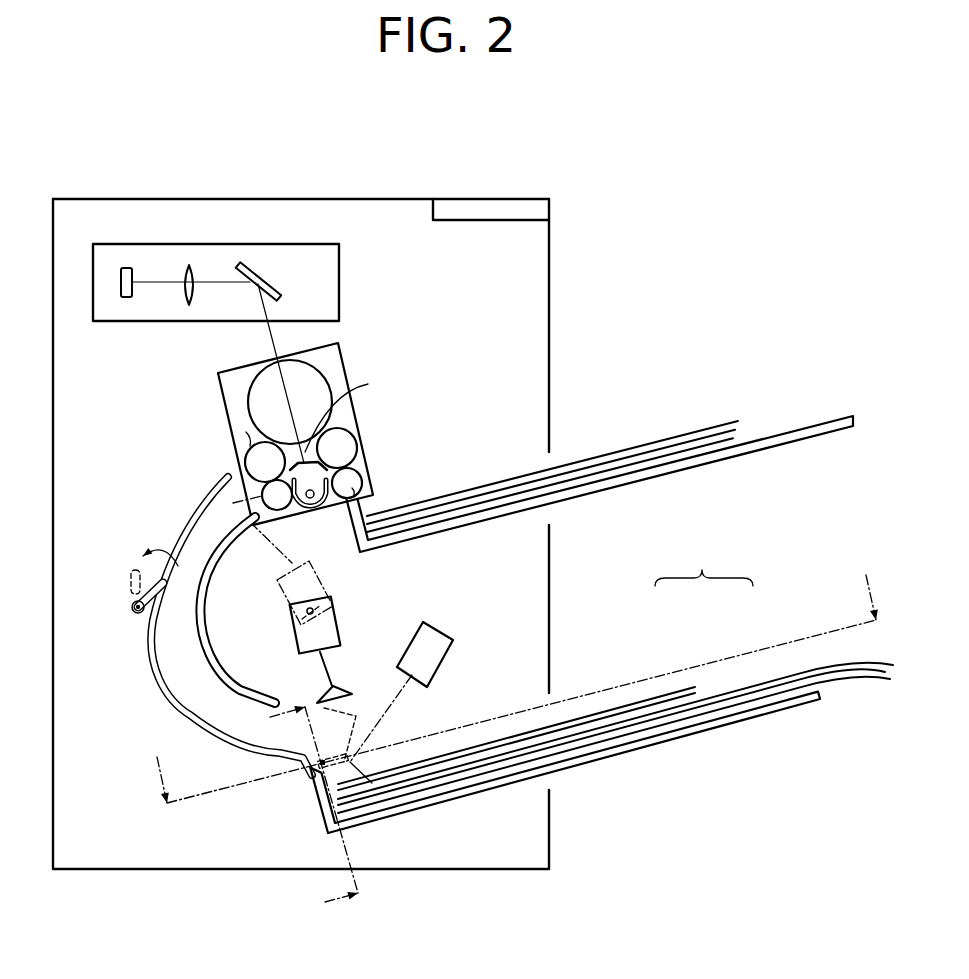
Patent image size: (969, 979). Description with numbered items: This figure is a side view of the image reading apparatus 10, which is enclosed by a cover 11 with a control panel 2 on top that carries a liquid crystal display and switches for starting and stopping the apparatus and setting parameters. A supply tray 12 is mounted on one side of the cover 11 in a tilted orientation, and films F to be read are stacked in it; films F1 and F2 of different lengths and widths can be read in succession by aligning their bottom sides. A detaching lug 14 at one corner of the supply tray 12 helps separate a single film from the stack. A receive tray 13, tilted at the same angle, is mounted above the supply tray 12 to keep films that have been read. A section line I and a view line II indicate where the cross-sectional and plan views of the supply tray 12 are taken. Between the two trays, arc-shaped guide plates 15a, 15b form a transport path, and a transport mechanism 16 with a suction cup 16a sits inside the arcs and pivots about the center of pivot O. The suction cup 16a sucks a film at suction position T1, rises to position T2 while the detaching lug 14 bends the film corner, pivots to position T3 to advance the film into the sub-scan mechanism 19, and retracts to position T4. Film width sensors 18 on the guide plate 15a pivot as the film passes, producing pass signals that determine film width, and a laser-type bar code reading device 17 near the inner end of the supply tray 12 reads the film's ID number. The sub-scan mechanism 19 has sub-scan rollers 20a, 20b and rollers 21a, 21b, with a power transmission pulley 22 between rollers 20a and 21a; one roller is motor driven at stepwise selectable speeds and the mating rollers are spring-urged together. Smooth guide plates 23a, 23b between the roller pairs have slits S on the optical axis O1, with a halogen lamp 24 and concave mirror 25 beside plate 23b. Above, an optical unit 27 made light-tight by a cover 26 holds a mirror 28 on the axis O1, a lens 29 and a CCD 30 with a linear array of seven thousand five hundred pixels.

The control panel 2 is at (507, 207).
The image reading apparatus 10 is at (343, 205).
The cover 11 is at (378, 198).
The supply tray 12 is at (722, 728).
The receive tray 13 is at (778, 447).
The detaching lug 14 is at (328, 778).
The outer arc-shaped guide plate 15a is at (153, 657).
The inner arc-shaped guide plate 15b is at (217, 643).
The transport mechanism 16 is at (333, 590).
The suction cup 16a is at (336, 686).
The bar code reading device 17 is at (440, 631).
The film width sensor 18 is at (130, 592).
The sub-scan mechanism 19 is at (228, 386).
The sub-scan roller 20a is at (246, 456).
The sub-scan roller 20b is at (262, 497).
The roller 21a is at (356, 440).
The roller 21b is at (362, 478).
The power transmission pulley 22 is at (325, 365).
The guide plate 23a is at (245, 418).
The guide plate 23b is at (362, 486).
The halogen lamp 24 is at (316, 510).
The concave mirror 25 is at (296, 560).
The cover 26 is at (218, 244).
The optical unit 27 is at (143, 250).
The mirror 28 is at (256, 268).
The lens 29 is at (185, 262).
The CCD 30 is at (123, 298).
The center of pivot O is at (307, 612).
The optical axis O1 is at (262, 333).
The slit S is at (345, 409).
The film F is at (704, 562).
The film F1 is at (680, 692).
The film F2 is at (773, 683).
The suction position T1 is at (359, 681).
The suction position T2 is at (292, 728).
The suction position T3 is at (250, 512).
The retracted position T4 is at (244, 564).
The section line I- I is at (290, 680).
The view line II- II is at (147, 730).